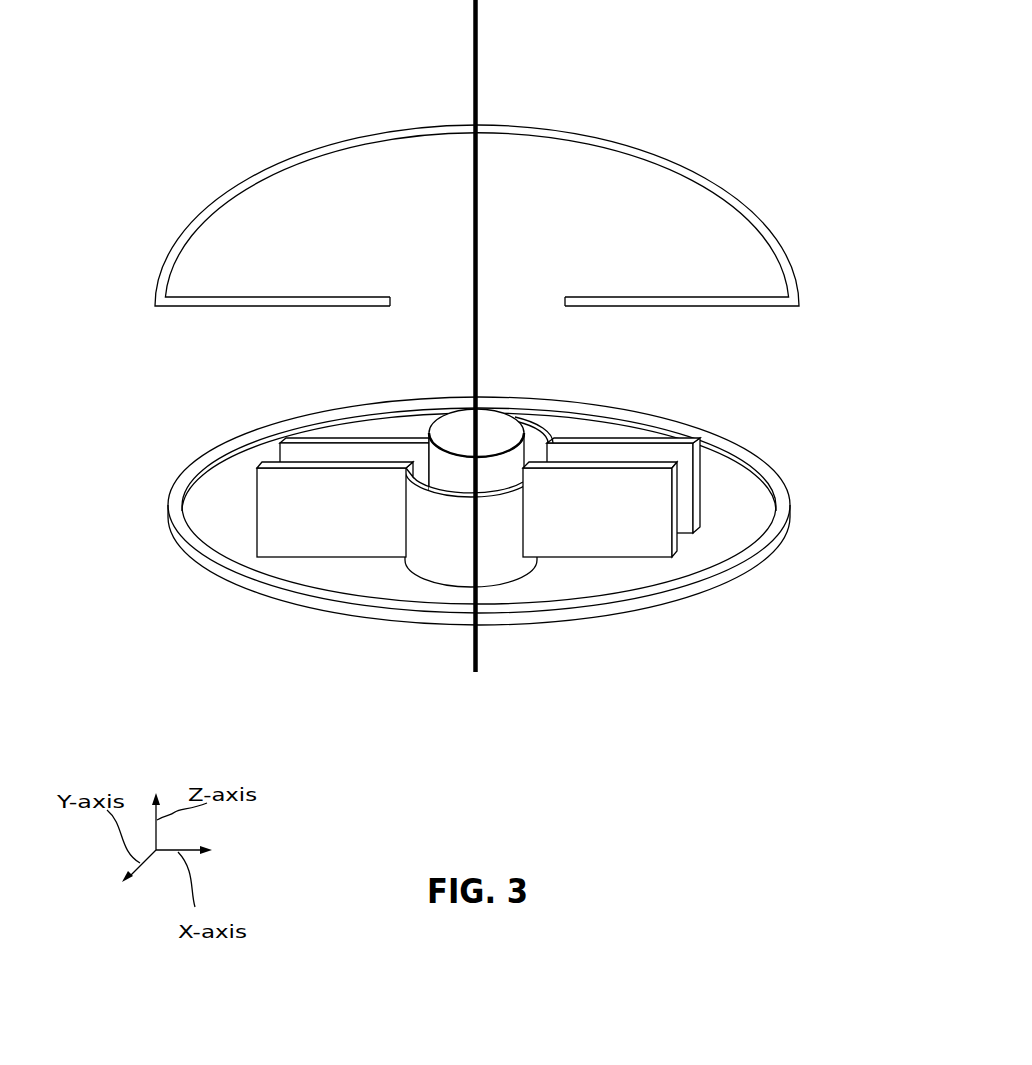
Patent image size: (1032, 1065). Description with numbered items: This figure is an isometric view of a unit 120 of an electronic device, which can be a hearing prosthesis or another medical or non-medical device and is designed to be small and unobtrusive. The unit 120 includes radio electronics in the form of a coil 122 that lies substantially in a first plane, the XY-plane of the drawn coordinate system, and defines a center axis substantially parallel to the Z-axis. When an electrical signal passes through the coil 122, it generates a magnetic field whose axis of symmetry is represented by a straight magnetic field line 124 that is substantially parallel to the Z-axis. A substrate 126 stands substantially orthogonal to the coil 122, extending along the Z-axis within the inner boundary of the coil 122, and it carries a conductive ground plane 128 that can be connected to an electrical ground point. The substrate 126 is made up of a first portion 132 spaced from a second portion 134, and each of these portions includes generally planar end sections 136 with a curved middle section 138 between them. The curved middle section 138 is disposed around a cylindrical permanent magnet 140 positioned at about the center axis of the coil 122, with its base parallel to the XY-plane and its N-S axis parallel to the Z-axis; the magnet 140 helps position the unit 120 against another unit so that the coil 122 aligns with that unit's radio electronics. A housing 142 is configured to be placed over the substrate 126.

The unit 120 is at (191, 63).
The coil 122 is at (365, 617).
The magnetic field line 124 is at (474, 33).
The substrate 126 is at (660, 557).
The ground plane 128 is at (307, 452).
The first portion 132 is at (262, 465).
The second portion 134 is at (670, 438).
The end sections 136 is at (423, 503).
The curved middle section 138 is at (466, 498).
The permanent magnet 140 is at (447, 425).
The housing 142 is at (363, 140).